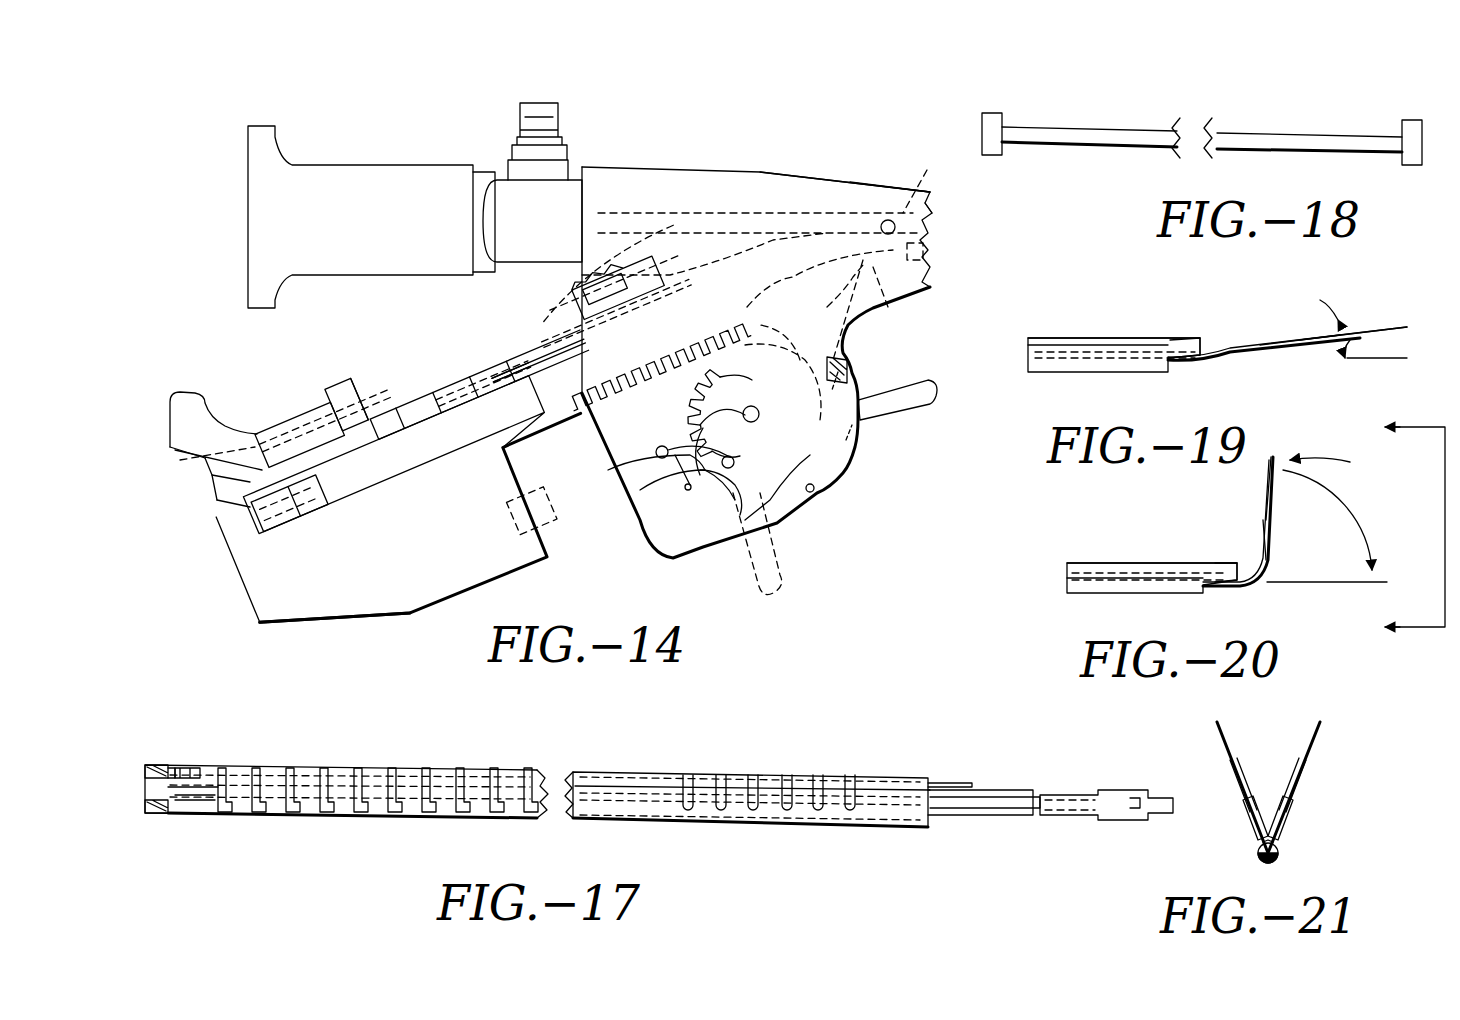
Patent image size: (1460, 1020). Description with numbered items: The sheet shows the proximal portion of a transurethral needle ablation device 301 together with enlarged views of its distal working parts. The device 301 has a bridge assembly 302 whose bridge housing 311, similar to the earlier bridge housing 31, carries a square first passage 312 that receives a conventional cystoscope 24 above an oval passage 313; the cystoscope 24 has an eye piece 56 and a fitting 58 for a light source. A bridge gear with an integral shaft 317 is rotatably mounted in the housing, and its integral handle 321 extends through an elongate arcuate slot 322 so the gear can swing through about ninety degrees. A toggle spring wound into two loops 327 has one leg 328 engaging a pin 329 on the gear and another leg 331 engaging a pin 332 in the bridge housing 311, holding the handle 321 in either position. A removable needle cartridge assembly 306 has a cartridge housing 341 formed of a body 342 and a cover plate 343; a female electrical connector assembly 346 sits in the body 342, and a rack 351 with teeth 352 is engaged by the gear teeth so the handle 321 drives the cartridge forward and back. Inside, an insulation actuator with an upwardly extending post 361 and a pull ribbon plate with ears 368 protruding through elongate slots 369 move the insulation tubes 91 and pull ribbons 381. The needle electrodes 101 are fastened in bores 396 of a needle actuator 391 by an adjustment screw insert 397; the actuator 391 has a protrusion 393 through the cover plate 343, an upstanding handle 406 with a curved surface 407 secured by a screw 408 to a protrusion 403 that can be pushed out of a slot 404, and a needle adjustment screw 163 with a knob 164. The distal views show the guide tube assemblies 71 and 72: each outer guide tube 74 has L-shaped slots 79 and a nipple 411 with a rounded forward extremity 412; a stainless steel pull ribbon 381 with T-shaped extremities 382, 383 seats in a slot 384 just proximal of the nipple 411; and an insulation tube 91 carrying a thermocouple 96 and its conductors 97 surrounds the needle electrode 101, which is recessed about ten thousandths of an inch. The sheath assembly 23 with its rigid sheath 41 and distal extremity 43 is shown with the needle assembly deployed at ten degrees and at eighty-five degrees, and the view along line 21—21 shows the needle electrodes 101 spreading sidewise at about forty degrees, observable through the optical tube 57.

In FIG. 14, the cystoscope 24 is at (424, 146).
In FIG. 14, the eye piece 56 is at (355, 172).
In FIG. 14, the fitting 58 is at (550, 120).
In FIG. 14, the bridge housing 31 is at (706, 173).
In FIG. 14, the transurethral needle ablation device 301 is at (776, 130).
In FIG. 14, the bridge assembly 302 is at (838, 172).
In FIG. 14, the first passage 312 is at (903, 213).
In FIG. 14, the passage 313 is at (898, 303).
In FIG. 14, the bridge housing 311 is at (858, 450).
In FIG. 14, the handle 321 is at (900, 425).
In FIG. 14, the elongate arcuate slot 322 is at (855, 380).
In FIG. 14, the integral shaft 317 is at (672, 428).
In FIG. 14, the loops 327 is at (663, 510).
In FIG. 14, the leg 328 is at (705, 520).
In FIG. 14, the pin 329 is at (752, 406).
In FIG. 14, the leg 331 is at (660, 490).
In FIG. 14, the pin 332 is at (740, 345).
In FIG. 14, the rack 351 is at (659, 304).
In FIG. 14, the teeth 352 is at (599, 456).
In FIG. 14, the ears 368 is at (601, 276).
In FIG. 14, the elongate slots 369 is at (654, 352).
In FIG. 14, the post 361 is at (470, 348).
In FIG. 14, the needle cartridge assembly 306 is at (390, 339).
In FIG. 14, the knob 164 is at (333, 370).
In FIG. 14, the needle adjustment screw 163 is at (309, 384).
In FIG. 14, the slot 404 is at (462, 344).
In FIG. 14, the cover plate 343 is at (479, 351).
In FIG. 14, the protrusion 393 is at (287, 408).
In FIG. 14, the protrusion 403 is at (328, 512).
In FIG. 14, the needle actuator 391 is at (233, 392).
In FIG. 14, the curved surface 407 is at (212, 390).
In FIG. 14, the upstanding handle 406 is at (210, 462).
In FIG. 14, the screw 408 is at (216, 480).
In FIG. 14, the bores 396 is at (226, 503).
In FIG. 14, the cartridge housing 341 is at (372, 536).
In FIG. 14, the body 342 is at (341, 632).
In FIG. 14, the female electrical connector assembly 346 is at (493, 570).
In FIG. 18, the pull ribbon 381 is at (1128, 122).
In FIG. 17, the pull ribbon 381 is at (952, 778).
In FIG. 18, the T-shaped extremity 382 is at (992, 118).
In FIG. 18, the T-shaped extremity 383 is at (1415, 125).
In FIG. 17, the T-shaped extremity 383 is at (185, 768).
In FIG. 19, the sheath assembly 23 is at (1064, 330).
In FIG. 20, the sheath assembly 23 is at (1090, 553).
In FIG. 19, the rigid sheath 41 is at (1100, 338).
In FIG. 20, the rigid sheath 41 is at (1075, 563).
In FIG. 19, the optical tube 57 is at (1152, 338).
In FIG. 20, the optical tube 57 is at (1150, 563).
In FIG. 21, the optical tube 57 is at (1268, 838).
In FIG. 19, the distal extremity 43 is at (1190, 345).
In FIG. 20, the distal extremity 43 is at (1225, 560).
In FIG. 19, the outer guide tube 74 is at (1240, 352).
In FIG. 20, the outer guide tube 74 is at (1238, 521).
In FIG. 17, the outer guide tube 74 is at (653, 773).
In FIG. 19, the guide tube assembly 71 is at (1060, 370).
In FIG. 20, the guide tube assembly 71 is at (1072, 598).
In FIG. 21, the guide tube assembly 71 is at (1245, 828).
In FIG. 19, the insulation tube 91 is at (1275, 352).
In FIG. 20, the insulation tube 91 is at (1270, 528).
In FIG. 21, the insulation tube 91 is at (1305, 783).
In FIG. 19, the needle electrode 101 is at (1335, 352).
In FIG. 20, the needle electrode 101 is at (1275, 475).
In FIG. 17, the needle electrode 101 is at (195, 800).
In FIG. 21, the needle electrode 101 is at (1222, 740).
In FIG. 20, the line 21— 21 is at (1397, 526).
In FIG. 17, the thermocouple 96 is at (215, 768).
In FIG. 17, the L-shaped slots 79 is at (458, 772).
In FIG. 17, the rounded forward extremity 412 is at (140, 775).
In FIG. 17, the nipple 411 is at (152, 815).
In FIG. 17, the slot 384 is at (172, 768).
In FIG. 17, the guide tube assembly 72 is at (604, 768).
In FIG. 21, the guide tube assembly 72 is at (1290, 826).
In FIG. 17, the conductors 97 is at (1030, 788).
In FIG. 17, the adjustment screw insert 397 is at (1125, 790).